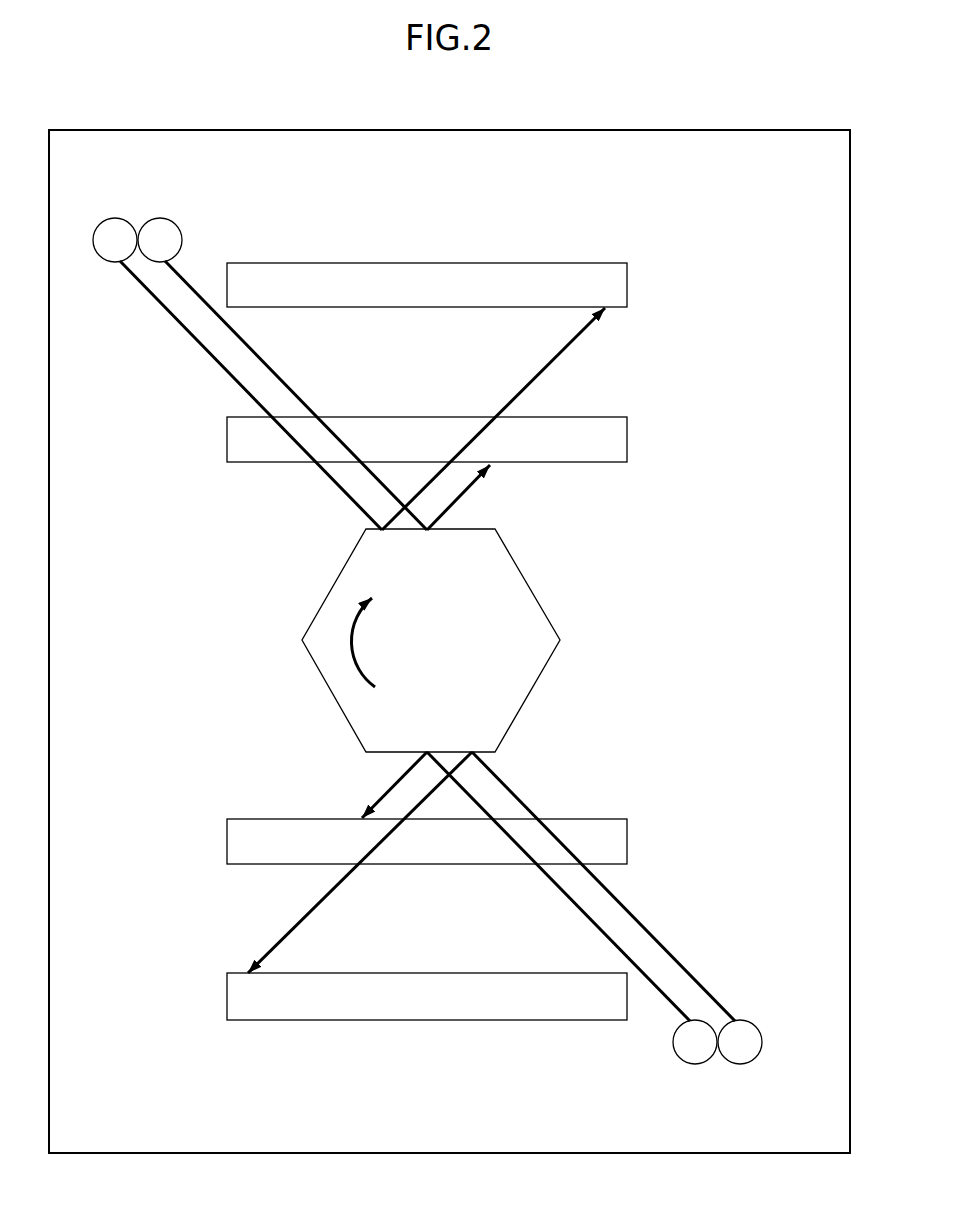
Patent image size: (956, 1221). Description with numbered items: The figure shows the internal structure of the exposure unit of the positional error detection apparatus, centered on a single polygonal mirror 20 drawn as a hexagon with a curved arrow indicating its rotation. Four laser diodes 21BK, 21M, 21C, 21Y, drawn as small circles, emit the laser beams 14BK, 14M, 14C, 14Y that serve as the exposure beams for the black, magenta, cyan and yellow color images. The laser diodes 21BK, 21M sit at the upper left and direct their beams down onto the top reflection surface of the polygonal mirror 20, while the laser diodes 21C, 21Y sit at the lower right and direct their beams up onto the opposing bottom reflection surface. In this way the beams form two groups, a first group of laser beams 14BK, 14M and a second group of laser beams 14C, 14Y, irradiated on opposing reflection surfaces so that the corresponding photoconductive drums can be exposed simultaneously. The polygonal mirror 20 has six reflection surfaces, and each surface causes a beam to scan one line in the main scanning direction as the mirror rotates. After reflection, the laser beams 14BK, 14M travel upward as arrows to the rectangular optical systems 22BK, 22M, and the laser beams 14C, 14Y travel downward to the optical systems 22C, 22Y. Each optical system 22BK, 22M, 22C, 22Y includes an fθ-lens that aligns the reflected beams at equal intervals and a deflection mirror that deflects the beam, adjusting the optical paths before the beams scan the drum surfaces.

The polygonal mirror 20 is at (546, 612).
The laser diode 21BK is at (108, 219).
The laser diode 21M is at (158, 218).
The laser diode 21C is at (693, 1063).
The laser diode 21Y is at (740, 1063).
The optical system 22BK is at (627, 282).
The optical system 22M is at (627, 440).
The optical system 22C is at (227, 843).
The optical system 22Y is at (227, 1003).
The laser beam 14BK is at (560, 353).
The laser beam 14M is at (250, 348).
The laser beam 14C is at (588, 914).
The laser beam 14Y is at (313, 914).